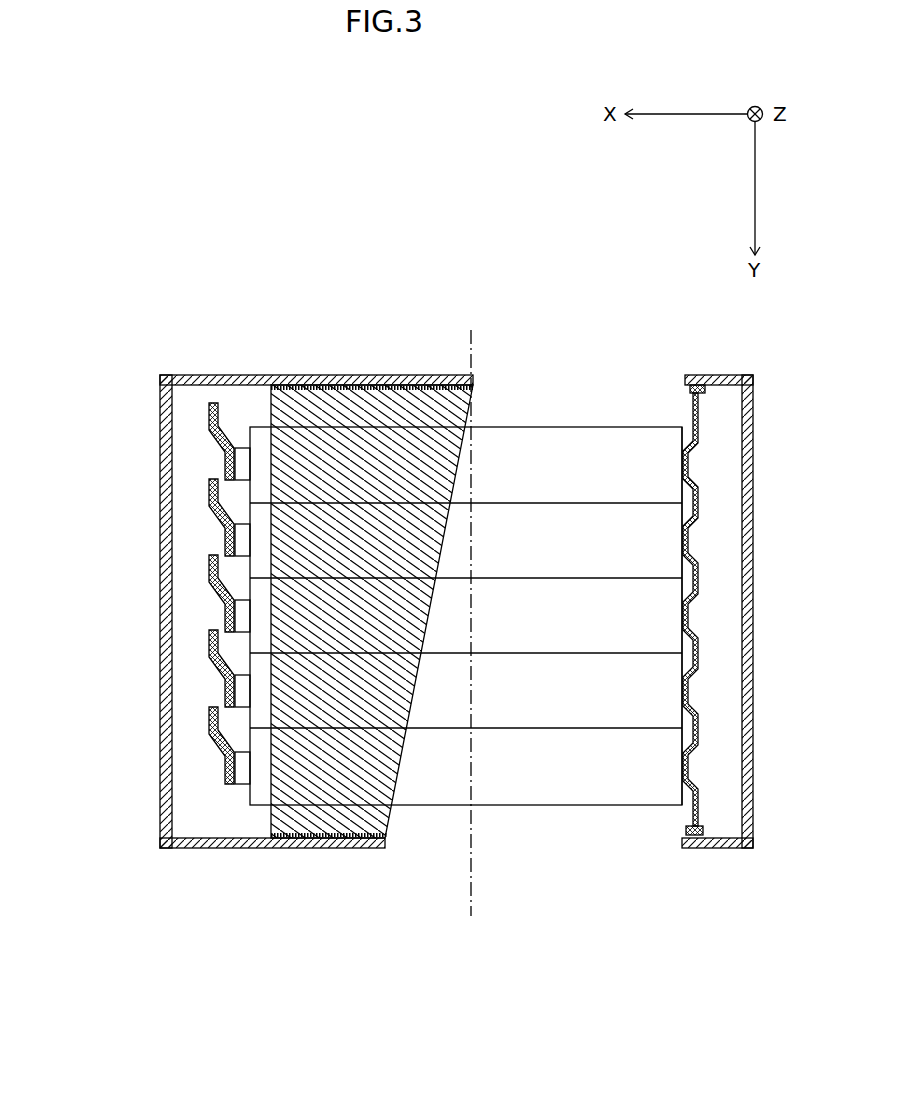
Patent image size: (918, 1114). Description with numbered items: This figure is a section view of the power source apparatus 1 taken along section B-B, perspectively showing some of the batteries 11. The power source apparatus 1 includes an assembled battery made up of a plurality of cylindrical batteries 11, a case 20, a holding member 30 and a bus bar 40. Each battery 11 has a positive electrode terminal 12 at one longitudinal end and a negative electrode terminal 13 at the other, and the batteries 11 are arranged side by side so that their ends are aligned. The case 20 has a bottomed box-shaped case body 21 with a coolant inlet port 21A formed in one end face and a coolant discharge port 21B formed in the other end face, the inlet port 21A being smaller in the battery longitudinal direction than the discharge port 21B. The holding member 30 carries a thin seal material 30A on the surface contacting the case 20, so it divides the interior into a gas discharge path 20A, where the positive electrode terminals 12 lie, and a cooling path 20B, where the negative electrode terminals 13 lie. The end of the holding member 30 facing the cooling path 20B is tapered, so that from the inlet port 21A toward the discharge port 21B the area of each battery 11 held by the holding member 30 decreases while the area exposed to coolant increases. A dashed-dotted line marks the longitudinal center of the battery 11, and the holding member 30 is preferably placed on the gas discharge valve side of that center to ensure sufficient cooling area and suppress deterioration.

The power source apparatus 1 is at (316, 325).
The battery 11 is at (640, 446).
The positive electrode terminal 12 is at (240, 452).
The negative electrode terminal 13 is at (690, 470).
The case 20 is at (396, 626).
The gas discharge path 20A is at (215, 805).
The cooling path 20B is at (587, 813).
The case body 21 is at (158, 788).
The coolant inlet port 21A is at (687, 378).
The coolant discharge port 21B is at (390, 846).
The holding member 30 is at (345, 836).
The seal material 30A is at (393, 384).
The bus bar 40 is at (183, 393).